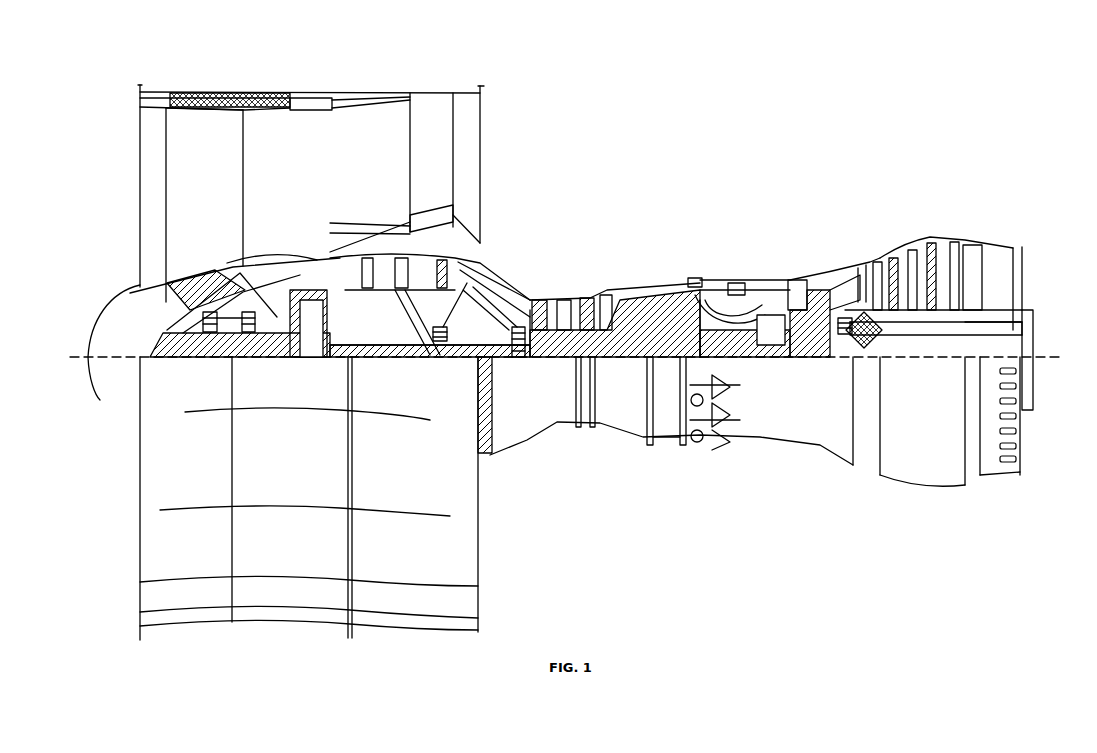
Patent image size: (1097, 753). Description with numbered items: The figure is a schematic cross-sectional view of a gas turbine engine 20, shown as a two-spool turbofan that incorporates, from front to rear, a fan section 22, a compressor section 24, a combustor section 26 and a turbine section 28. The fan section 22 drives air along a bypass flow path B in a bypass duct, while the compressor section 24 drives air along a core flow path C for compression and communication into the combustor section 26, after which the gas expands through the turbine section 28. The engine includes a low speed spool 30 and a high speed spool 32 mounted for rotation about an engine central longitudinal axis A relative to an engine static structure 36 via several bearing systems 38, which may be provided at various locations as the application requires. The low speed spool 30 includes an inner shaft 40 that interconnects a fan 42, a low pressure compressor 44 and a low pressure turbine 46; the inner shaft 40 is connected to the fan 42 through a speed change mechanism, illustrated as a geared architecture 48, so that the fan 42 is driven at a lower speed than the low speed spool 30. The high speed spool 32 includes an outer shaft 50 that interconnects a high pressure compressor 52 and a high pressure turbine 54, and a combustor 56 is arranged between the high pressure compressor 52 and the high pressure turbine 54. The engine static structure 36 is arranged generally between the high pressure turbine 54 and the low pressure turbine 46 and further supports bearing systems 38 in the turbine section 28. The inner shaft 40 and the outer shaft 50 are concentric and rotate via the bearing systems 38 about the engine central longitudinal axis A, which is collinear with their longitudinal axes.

The gas turbine engine 20 is at (930, 100).
The fan section 22 is at (220, 88).
The compressor section 24 is at (606, 212).
The combustor section 26 is at (750, 202).
The turbine section 28 is at (858, 198).
The low speed spool 30 is at (640, 362).
The high speed spool 32 is at (697, 290).
The engine static structure 36 is at (668, 446).
The bearing systems 38 is at (200, 358).
The inner shaft 40 is at (497, 362).
The fan 42 is at (204, 205).
The low pressure compressor 44 is at (455, 217).
The low pressure turbine 46 is at (930, 241).
The geared architecture 48 is at (307, 358).
The outer shaft 50 is at (737, 358).
The high pressure compressor 52 is at (580, 296).
The high pressure turbine 54 is at (797, 279).
The combustor 56 is at (745, 283).
The engine central longitudinal axis A is at (1047, 353).
The bypass flow path B is at (368, 162).
The core flow path C is at (290, 262).